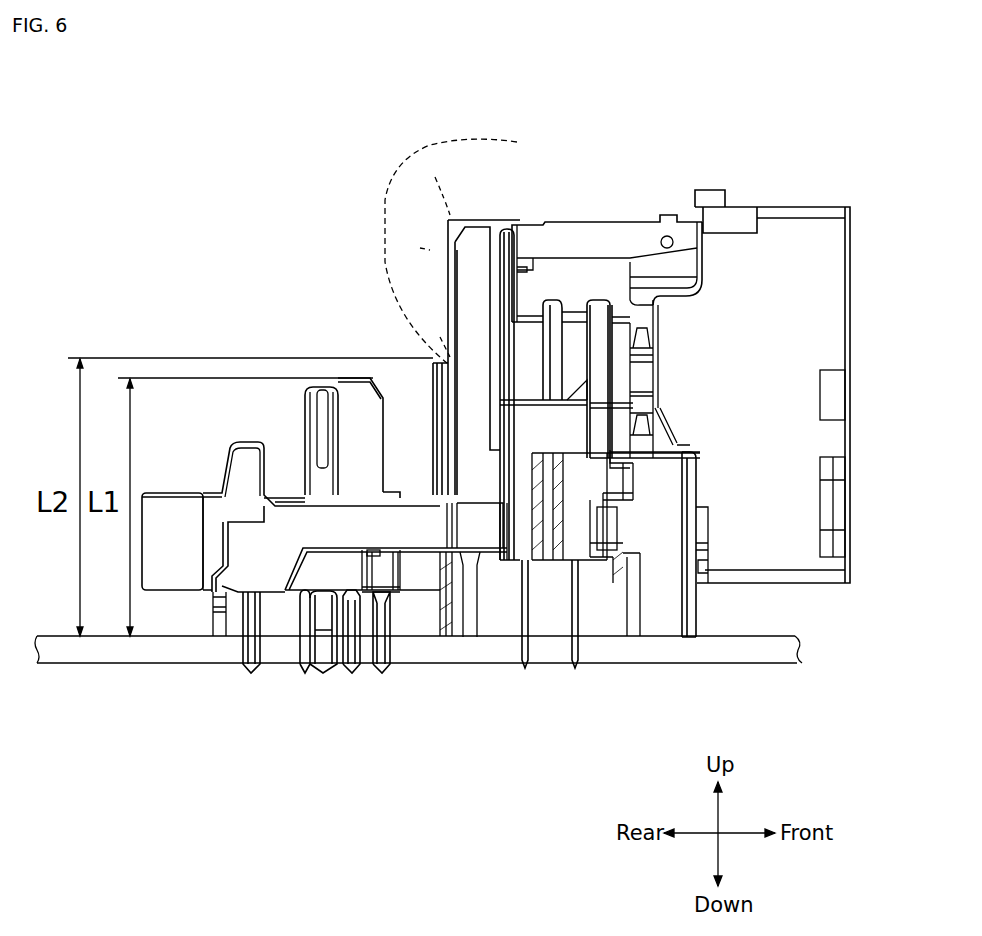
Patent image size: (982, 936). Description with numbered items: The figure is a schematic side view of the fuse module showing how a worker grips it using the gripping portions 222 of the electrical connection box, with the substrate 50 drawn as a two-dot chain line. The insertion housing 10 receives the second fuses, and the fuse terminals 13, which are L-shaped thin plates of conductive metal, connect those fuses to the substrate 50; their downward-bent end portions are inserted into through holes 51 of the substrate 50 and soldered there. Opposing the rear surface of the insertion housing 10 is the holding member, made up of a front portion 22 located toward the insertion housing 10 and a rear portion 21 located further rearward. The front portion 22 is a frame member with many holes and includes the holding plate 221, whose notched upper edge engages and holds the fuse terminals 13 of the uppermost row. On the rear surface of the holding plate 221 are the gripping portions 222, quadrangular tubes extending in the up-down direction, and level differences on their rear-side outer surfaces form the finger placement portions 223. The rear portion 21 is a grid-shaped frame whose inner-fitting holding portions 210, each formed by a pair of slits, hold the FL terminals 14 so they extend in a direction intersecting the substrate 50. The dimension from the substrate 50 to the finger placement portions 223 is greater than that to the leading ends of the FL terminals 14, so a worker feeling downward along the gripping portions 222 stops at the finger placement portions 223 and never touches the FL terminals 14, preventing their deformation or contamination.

The insertion housing 10 is at (808, 191).
The fuse terminals 13 is at (663, 217).
The FL terminals 14 is at (307, 427).
The rear portion 21 is at (178, 604).
The front portion 22 is at (588, 276).
The inner-fitting holding portions 210 is at (420, 532).
The holding plate 221 is at (507, 226).
The gripping portions 222 is at (452, 220).
The finger placement portions 223 is at (440, 355).
The substrate 50 is at (802, 652).
The through holes 51 is at (530, 652).